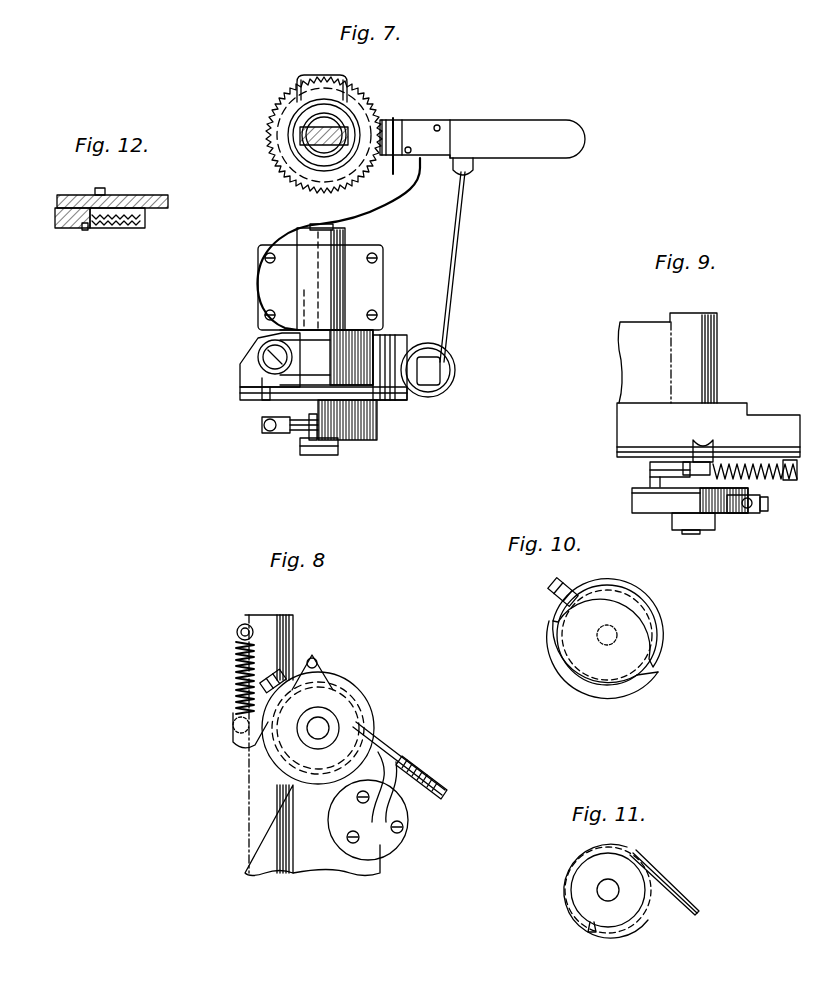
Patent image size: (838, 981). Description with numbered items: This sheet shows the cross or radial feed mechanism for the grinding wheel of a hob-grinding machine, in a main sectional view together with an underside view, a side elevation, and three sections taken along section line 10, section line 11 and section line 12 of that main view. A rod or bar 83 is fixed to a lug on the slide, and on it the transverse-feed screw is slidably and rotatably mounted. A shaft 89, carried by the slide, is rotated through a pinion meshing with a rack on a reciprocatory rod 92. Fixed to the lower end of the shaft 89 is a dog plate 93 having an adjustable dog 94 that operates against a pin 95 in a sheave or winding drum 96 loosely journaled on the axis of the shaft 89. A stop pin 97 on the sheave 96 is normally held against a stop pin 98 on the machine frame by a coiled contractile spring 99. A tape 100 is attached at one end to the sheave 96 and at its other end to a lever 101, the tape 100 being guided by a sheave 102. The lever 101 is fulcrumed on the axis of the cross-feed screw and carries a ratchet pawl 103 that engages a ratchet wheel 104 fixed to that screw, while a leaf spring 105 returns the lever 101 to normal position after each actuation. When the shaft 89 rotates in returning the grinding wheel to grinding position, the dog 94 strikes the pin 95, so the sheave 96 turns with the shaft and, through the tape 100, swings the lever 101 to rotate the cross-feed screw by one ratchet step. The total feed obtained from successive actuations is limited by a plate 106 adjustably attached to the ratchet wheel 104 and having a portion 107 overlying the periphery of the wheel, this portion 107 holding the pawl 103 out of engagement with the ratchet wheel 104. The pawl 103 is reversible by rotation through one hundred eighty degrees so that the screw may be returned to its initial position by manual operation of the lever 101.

In FIG. 7, the section line 10— 10 is at (240, 418).
In FIG. 7, the section line 11— 11 is at (240, 400).
In FIG. 7, the section line 12 is at (493, 128).
In FIG. 7, the rod or bar 83 is at (362, 106).
In FIG. 7, the shaft 89 is at (320, 456).
In FIG. 9, the shaft 89 is at (690, 532).
In FIG. 8, the shaft 89 is at (330, 724).
In FIG. 10, the shaft 89 is at (605, 640).
In FIG. 11, the shaft 89 is at (615, 878).
In FIG. 7, the reciprocatory rod 92 is at (262, 345).
In FIG. 7, the dog plate 93 is at (378, 446).
In FIG. 9, the dog plate 93 is at (638, 518).
In FIG. 8, the dog plate 93 is at (343, 678).
In FIG. 10, the dog plate 93 is at (612, 582).
In FIG. 7, the adjustable dog 94 is at (277, 446).
In FIG. 9, the adjustable dog 94 is at (737, 516).
In FIG. 8, the adjustable dog 94 is at (273, 681).
In FIG. 10, the adjustable dog 94 is at (549, 598).
In FIG. 7, the pin 95 is at (311, 442).
In FIG. 9, the pin 95 is at (766, 510).
In FIG. 8, the pin 95 is at (318, 658).
In FIG. 7, the sheave or winding drum 96 is at (305, 380).
In FIG. 9, the sheave or winding drum 96 is at (650, 468).
In FIG. 11, the sheave or winding drum 96 is at (640, 925).
In FIG. 9, the stop pin 97 is at (683, 462).
In FIG. 9, the stop pin 98 is at (710, 460).
In FIG. 8, the stop pin 98 is at (234, 715).
In FIG. 9, the coiled contractile spring 99 is at (752, 470).
In FIG. 8, the coiled contractile spring 99 is at (236, 672).
In FIG. 7, the tape 100 is at (456, 301).
In FIG. 8, the tape 100 is at (380, 742).
In FIG. 11, the tape 100 is at (690, 893).
In FIG. 7, the lever 101 is at (540, 122).
In FIG. 12, the lever 101 is at (165, 198).
In FIG. 7, the sheave 102 is at (448, 365).
In FIG. 8, the sheave 102 is at (446, 782).
In FIG. 7, the ratchet pawl 103 is at (391, 138).
In FIG. 12, the ratchet pawl 103 is at (92, 229).
In FIG. 7, the ratchet wheel 104 is at (271, 169).
In FIG. 12, the ratchet wheel 104 is at (58, 216).
In FIG. 7, the leaf spring 105 is at (390, 208).
In FIG. 7, the plate 106 is at (286, 112).
In FIG. 7, the portion 107 is at (323, 77).